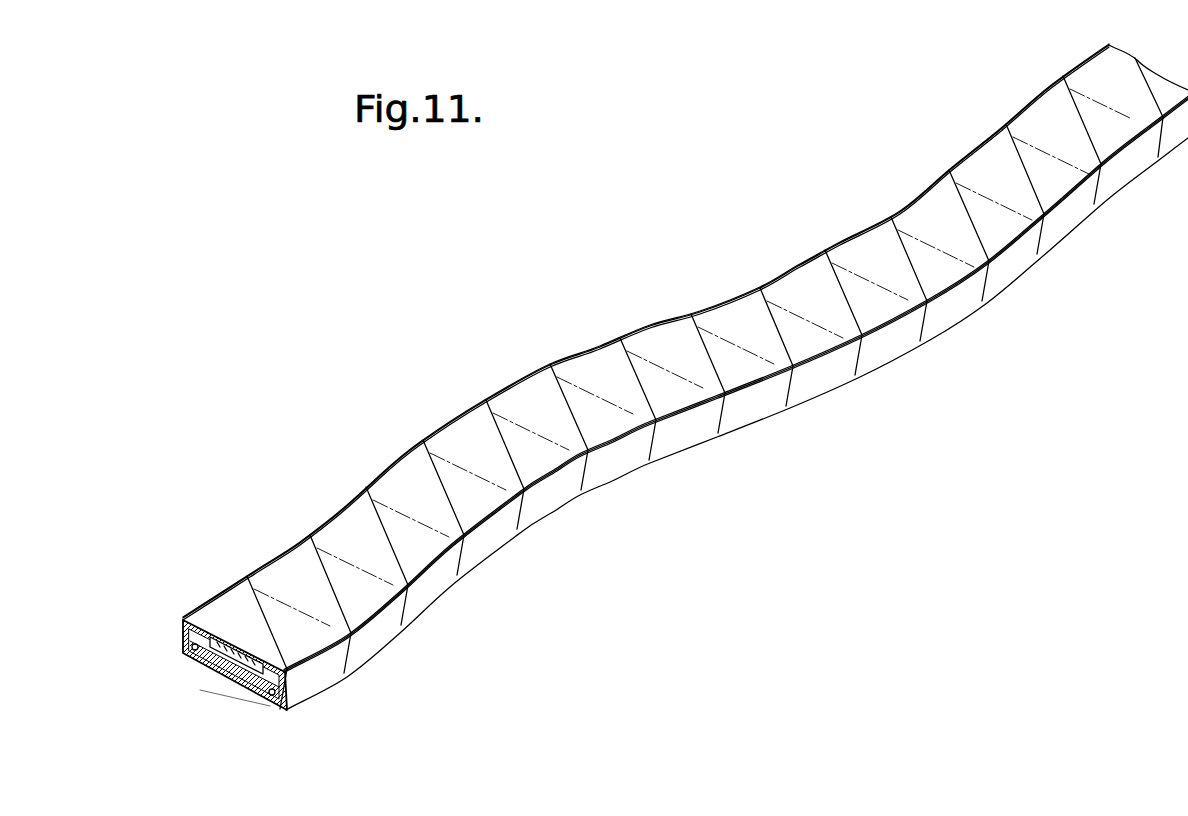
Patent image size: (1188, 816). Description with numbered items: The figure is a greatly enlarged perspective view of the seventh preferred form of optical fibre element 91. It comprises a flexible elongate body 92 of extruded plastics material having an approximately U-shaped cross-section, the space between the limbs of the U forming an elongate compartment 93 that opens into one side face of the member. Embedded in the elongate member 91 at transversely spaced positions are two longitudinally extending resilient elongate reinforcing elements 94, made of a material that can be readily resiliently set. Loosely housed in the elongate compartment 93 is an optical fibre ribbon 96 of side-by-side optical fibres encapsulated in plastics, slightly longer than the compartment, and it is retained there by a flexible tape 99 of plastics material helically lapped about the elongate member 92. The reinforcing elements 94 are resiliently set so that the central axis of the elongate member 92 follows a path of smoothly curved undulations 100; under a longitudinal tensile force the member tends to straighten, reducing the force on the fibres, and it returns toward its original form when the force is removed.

The optical fibre element 91 is at (642, 405).
The flexible elongate body 92 is at (232, 688).
The elongate compartment 93 is at (208, 664).
The resilient elongate reinforcing elements 94 is at (190, 646).
The optical fibre ribbon 96 is at (240, 646).
The flexible tape 99 is at (500, 412).
The smoothly curved undulations 100 is at (616, 473).